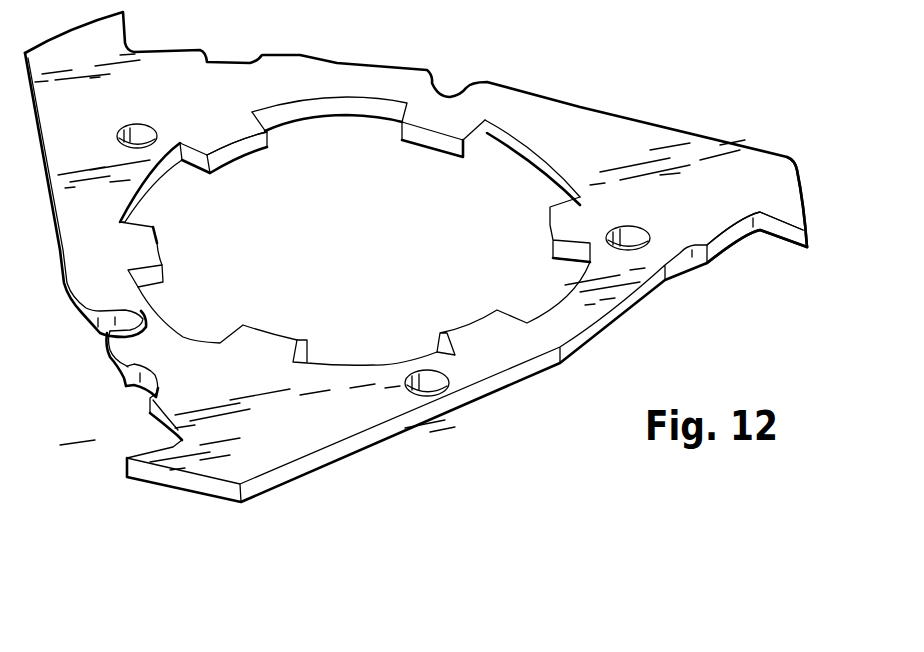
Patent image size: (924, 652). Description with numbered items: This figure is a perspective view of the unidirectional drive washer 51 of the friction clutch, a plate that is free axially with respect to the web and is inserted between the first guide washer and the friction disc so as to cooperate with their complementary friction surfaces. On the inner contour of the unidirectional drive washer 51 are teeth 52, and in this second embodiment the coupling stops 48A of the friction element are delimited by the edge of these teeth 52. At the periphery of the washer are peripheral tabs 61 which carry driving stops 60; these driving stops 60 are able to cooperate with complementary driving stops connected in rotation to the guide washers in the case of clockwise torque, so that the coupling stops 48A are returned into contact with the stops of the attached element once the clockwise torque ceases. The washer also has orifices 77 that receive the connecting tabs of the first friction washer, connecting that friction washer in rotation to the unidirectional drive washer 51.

The unidirectional drive washer 51 is at (365, 82).
The teeth 52 is at (217, 133).
The coupling stops 48A is at (190, 173).
The orifices 77 is at (627, 233).
The peripheral tabs 61 is at (780, 192).
The driving stops 60 is at (783, 230).